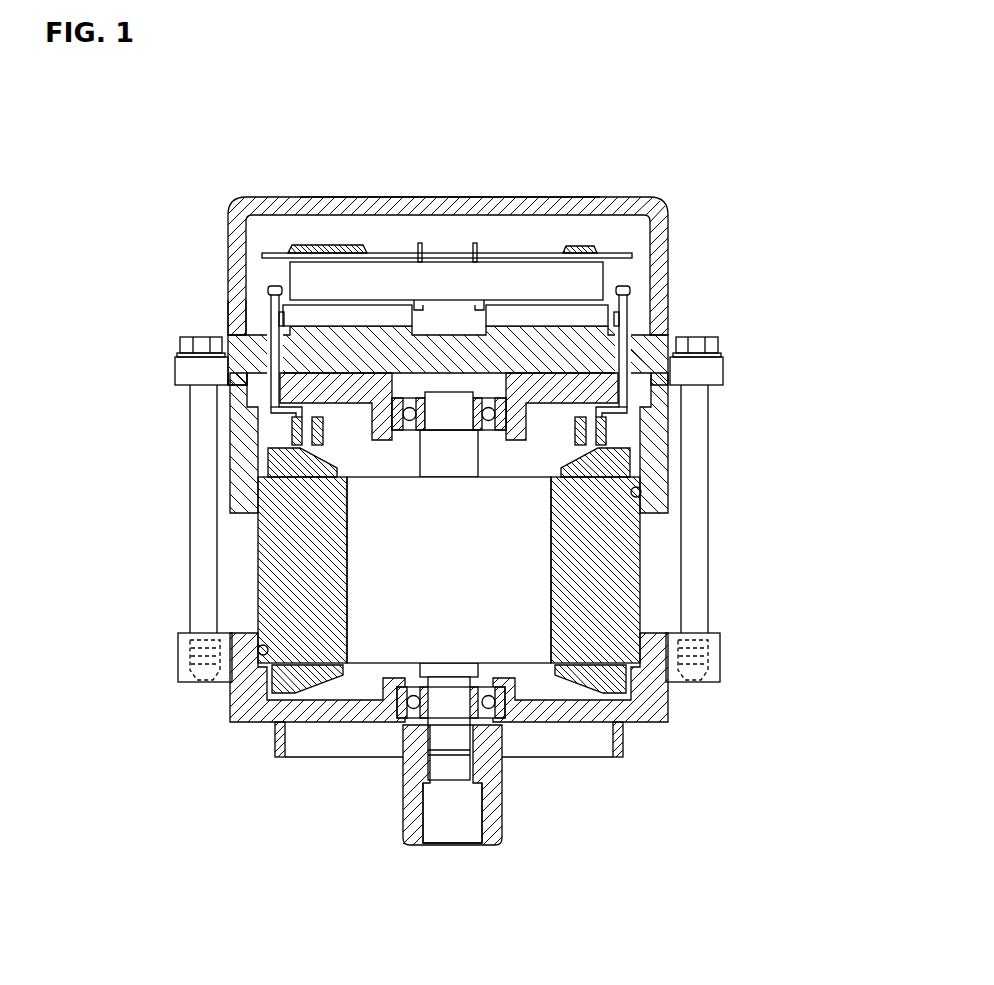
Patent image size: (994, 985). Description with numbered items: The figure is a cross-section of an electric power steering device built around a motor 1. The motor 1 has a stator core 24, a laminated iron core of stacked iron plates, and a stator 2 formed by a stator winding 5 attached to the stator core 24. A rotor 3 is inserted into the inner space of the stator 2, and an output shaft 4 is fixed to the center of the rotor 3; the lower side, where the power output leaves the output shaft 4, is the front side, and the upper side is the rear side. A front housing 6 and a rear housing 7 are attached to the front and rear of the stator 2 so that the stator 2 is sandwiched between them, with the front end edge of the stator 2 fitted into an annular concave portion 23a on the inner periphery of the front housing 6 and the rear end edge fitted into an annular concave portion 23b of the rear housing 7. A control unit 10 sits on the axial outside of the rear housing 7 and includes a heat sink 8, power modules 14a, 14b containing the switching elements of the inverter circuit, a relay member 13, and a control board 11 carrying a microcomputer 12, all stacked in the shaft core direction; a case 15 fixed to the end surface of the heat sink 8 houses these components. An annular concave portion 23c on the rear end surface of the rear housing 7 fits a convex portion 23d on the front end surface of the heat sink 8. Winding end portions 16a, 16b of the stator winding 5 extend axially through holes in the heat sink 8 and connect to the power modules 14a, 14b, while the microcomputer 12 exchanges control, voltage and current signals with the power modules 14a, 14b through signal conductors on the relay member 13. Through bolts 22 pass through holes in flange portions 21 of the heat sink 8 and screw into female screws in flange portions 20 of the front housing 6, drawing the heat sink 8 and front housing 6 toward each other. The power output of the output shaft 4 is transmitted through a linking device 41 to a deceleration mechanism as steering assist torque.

The motor 1 is at (740, 524).
The stator 2 is at (647, 585).
The rotor 3 is at (352, 513).
The output shaft 4 is at (403, 773).
The stator winding 5 is at (268, 468).
The front housing 6 is at (272, 728).
The rear housing 7 is at (232, 402).
The heat sink 8 is at (664, 336).
The control unit 10 is at (663, 232).
The control board 11 is at (390, 253).
The microcomputer 12 is at (300, 246).
The relay member 13 is at (512, 262).
The power module 14a is at (315, 308).
The power module 14b is at (568, 312).
The case 15 is at (452, 197).
The winding end portion 16a is at (272, 322).
The winding end portion 16b is at (622, 302).
The flange portion 20 is at (720, 653).
The flange portion 21 is at (722, 370).
The through bolt 22 is at (716, 338).
The concave portion 23a is at (252, 668).
The concave portion 23b is at (650, 500).
The concave portion 23c is at (232, 369).
The convex portion 23d is at (228, 322).
The stator core 24 is at (268, 580).
The linking device 41 is at (503, 815).